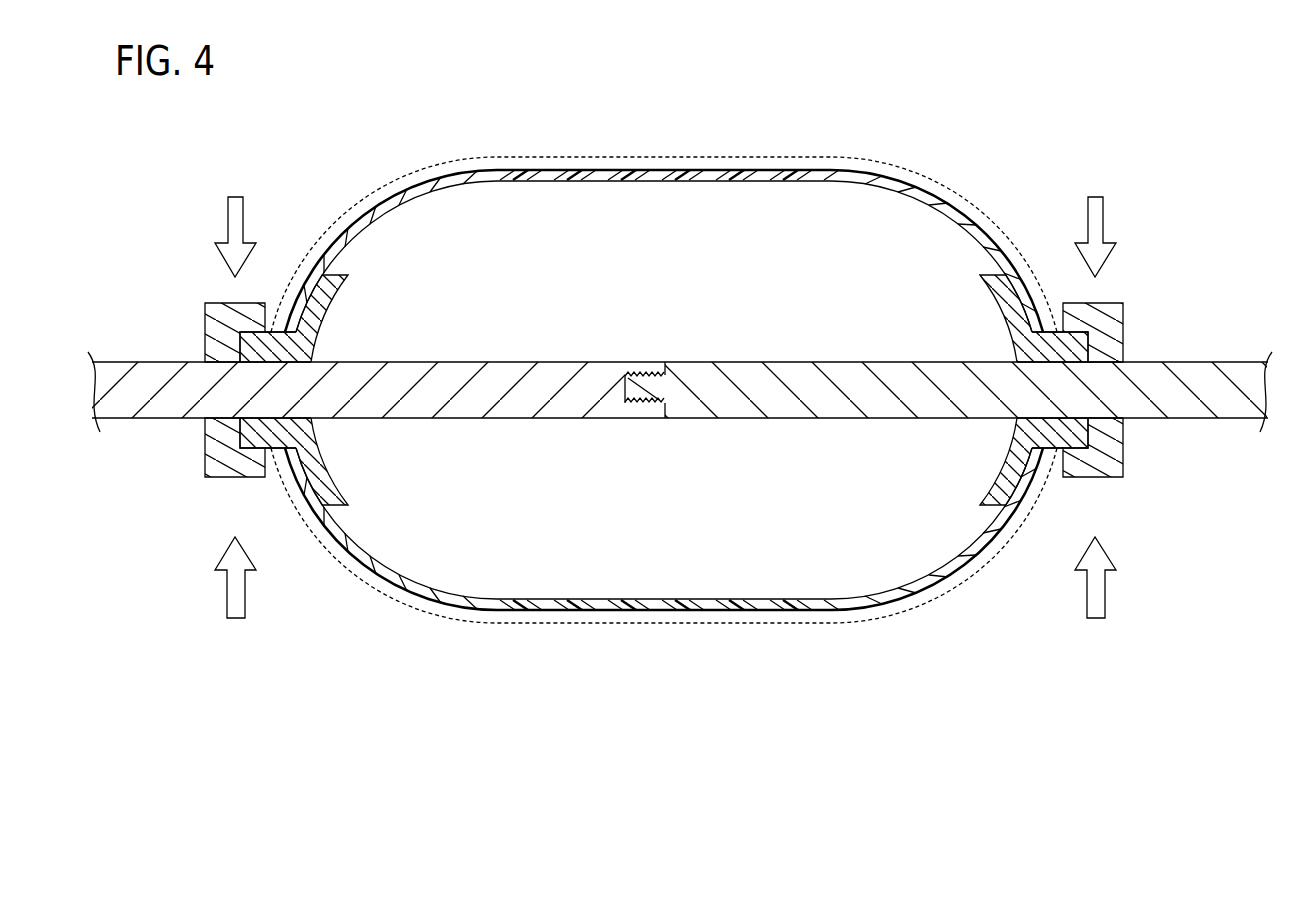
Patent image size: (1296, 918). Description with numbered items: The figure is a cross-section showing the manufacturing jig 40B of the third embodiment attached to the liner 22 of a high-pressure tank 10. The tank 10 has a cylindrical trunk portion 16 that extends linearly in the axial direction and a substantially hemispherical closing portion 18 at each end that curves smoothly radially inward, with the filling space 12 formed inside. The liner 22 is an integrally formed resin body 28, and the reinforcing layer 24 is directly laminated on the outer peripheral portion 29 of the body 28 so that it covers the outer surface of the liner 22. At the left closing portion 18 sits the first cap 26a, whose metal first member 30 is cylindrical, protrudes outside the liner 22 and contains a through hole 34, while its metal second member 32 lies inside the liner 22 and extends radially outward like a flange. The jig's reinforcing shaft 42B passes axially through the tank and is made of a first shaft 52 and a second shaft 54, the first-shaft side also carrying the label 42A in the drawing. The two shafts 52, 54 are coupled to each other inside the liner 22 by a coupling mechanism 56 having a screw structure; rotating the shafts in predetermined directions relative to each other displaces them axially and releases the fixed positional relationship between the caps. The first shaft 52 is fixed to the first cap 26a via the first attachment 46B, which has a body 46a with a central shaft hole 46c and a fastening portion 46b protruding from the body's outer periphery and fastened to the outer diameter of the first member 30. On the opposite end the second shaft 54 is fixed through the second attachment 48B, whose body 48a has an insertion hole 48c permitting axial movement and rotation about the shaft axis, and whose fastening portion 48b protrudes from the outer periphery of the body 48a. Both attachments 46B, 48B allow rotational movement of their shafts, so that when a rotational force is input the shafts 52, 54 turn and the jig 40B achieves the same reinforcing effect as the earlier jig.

The high-pressure tank 10 is at (447, 128).
The filling space 12 is at (585, 266).
The trunk portion 16 is at (806, 178).
The closing portion 18 is at (348, 222).
The liner 22 is at (418, 180).
The reinforcing layer 24 is at (722, 152).
The first cap 26a is at (275, 455).
The body 28 is at (567, 178).
The outer peripheral portion 29 is at (654, 178).
The first member 30 is at (262, 440).
The second member 32 is at (322, 468).
The through hole 34 is at (300, 378).
The manufacturing jig 40B is at (1213, 318).
The first shaft member 42A is at (425, 352).
The reinforcing shaft 42B is at (695, 352).
The first attachment 46B is at (212, 310).
The body 46a is at (215, 340).
The fastening portion 46b is at (242, 460).
The shaft hole 46c is at (205, 405).
The second attachment 48B is at (1120, 312).
The body 48a is at (1115, 342).
The fastening portion 48b is at (1085, 460).
The insertion hole 48c is at (1122, 415).
The first shaft 52 is at (548, 385).
The second shaft 54 is at (770, 385).
The coupling mechanism 56 is at (668, 345).